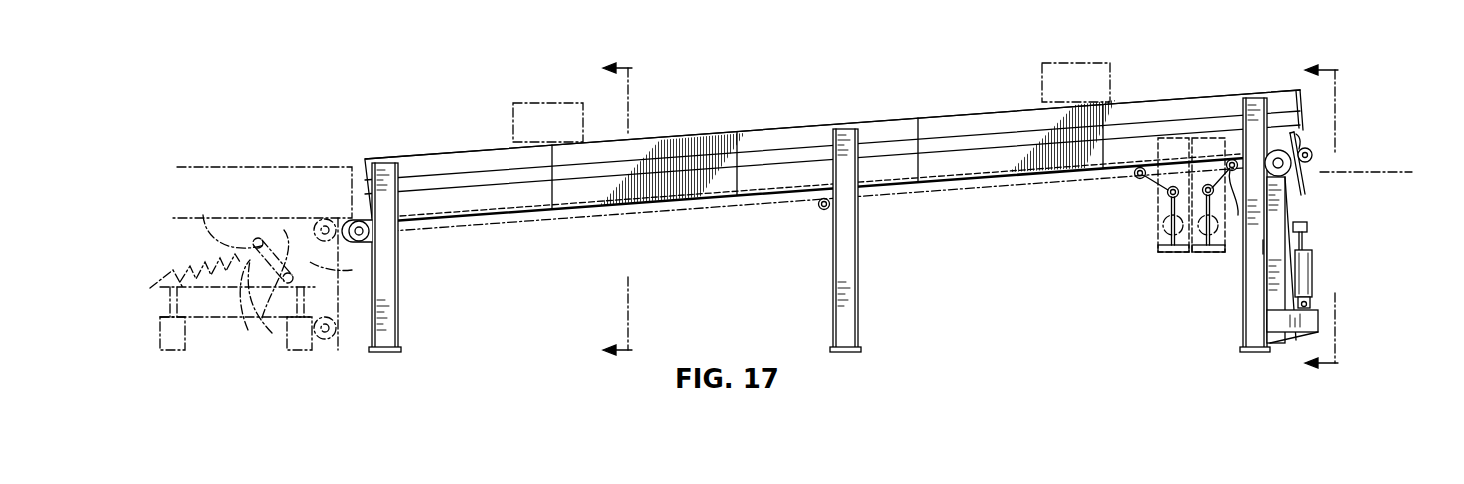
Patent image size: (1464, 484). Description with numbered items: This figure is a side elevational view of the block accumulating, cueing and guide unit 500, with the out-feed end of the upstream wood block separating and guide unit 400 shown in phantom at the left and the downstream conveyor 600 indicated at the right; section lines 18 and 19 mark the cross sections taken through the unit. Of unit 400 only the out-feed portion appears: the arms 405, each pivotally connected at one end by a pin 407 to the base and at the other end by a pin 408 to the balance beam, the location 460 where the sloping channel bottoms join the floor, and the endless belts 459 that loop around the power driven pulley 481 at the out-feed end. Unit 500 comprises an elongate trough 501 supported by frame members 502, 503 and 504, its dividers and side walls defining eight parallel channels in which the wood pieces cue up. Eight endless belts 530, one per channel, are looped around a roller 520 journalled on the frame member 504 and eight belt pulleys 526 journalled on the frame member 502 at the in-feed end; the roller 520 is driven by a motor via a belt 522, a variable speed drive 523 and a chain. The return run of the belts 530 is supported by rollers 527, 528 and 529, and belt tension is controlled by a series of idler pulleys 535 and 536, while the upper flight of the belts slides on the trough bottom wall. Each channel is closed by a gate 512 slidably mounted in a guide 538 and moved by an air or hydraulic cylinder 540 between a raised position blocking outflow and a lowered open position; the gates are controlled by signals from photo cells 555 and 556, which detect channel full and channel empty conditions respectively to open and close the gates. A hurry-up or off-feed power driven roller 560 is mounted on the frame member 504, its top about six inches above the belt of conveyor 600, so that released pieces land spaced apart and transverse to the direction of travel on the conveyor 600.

The wood block separating and guide unit 400 is at (286, 222).
The arm 405 is at (284, 230).
The pin 407 is at (272, 333).
The pin 408 is at (248, 330).
The endless belt 459 is at (352, 270).
The location 460 is at (203, 215).
The power driven pulley 481 is at (338, 215).
The block accumulating, cueing and guide unit 500 is at (834, 173).
The elongate trough 501 is at (955, 98).
The frame member 502 is at (386, 333).
The frame member 503 is at (852, 286).
The frame member 504 is at (1243, 321).
The gate 512 is at (1297, 135).
The roller 520 is at (1293, 208).
The belt 522 is at (1012, 7).
The variable speed drive 523 is at (1138, 0).
The belt pulley 526 is at (352, 242).
The roller 527 is at (1263, 247).
The roller 528 is at (1138, 180).
The roller 529 is at (822, 208).
The endless belt 530 is at (660, 214).
The idler pulley 535 is at (1166, 200).
The idler pulley 536 is at (1228, 252).
The guide 538 is at (1288, 193).
The air or hydraulic cylinder 540 is at (1312, 277).
The photo cell 555 is at (517, 104).
The photo cell 556 is at (1112, 87).
The off-feed power driven roller 560 is at (1310, 149).
The conveyor 600 is at (1450, 148).
The section line 18 is at (1325, 221).
The section line 19 is at (616, 216).